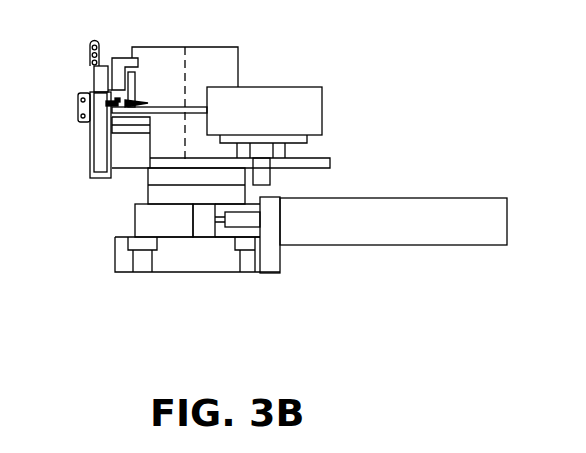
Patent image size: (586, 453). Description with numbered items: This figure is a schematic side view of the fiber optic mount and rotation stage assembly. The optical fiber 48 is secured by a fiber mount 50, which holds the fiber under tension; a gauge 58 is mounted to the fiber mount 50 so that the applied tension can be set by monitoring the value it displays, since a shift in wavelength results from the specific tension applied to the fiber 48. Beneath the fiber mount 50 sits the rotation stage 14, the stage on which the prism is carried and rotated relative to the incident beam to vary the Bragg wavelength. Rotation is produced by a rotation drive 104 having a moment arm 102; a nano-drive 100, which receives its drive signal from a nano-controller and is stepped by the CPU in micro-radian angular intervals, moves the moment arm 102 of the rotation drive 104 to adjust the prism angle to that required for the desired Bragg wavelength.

The rotation stage 14 is at (115, 214).
The optical fiber 48 is at (150, 103).
The fiber mount 50 is at (112, 108).
The gauge 58 is at (263, 118).
The nano-drive 100 is at (468, 237).
The moment arm 102 is at (208, 228).
The rotation drive 104 is at (152, 190).